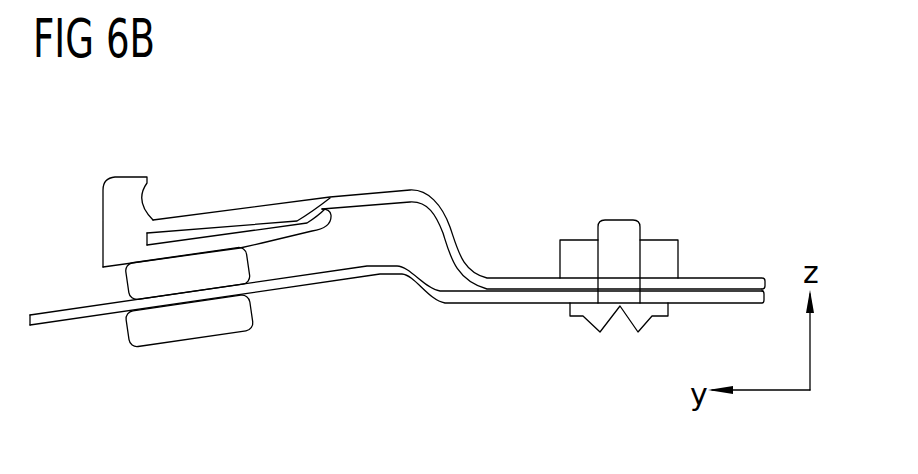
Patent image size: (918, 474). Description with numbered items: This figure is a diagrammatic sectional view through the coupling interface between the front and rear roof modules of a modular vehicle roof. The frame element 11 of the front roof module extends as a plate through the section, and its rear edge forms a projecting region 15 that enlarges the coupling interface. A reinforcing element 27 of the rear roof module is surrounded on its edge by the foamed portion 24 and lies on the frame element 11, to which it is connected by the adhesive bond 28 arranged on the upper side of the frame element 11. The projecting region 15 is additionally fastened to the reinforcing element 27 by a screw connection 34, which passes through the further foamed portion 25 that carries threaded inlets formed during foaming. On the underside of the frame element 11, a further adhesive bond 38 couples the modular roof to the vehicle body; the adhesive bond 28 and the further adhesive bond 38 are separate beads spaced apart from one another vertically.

The frame element 11 is at (69, 372).
The projecting region 15 is at (450, 300).
The foamed portion 24 is at (117, 198).
The further foamed portion 25 is at (667, 258).
The reinforcing element 27 is at (453, 232).
The adhesive bond 28 is at (143, 281).
The screw connection 34 is at (617, 232).
The further adhesive bond 38 is at (165, 332).